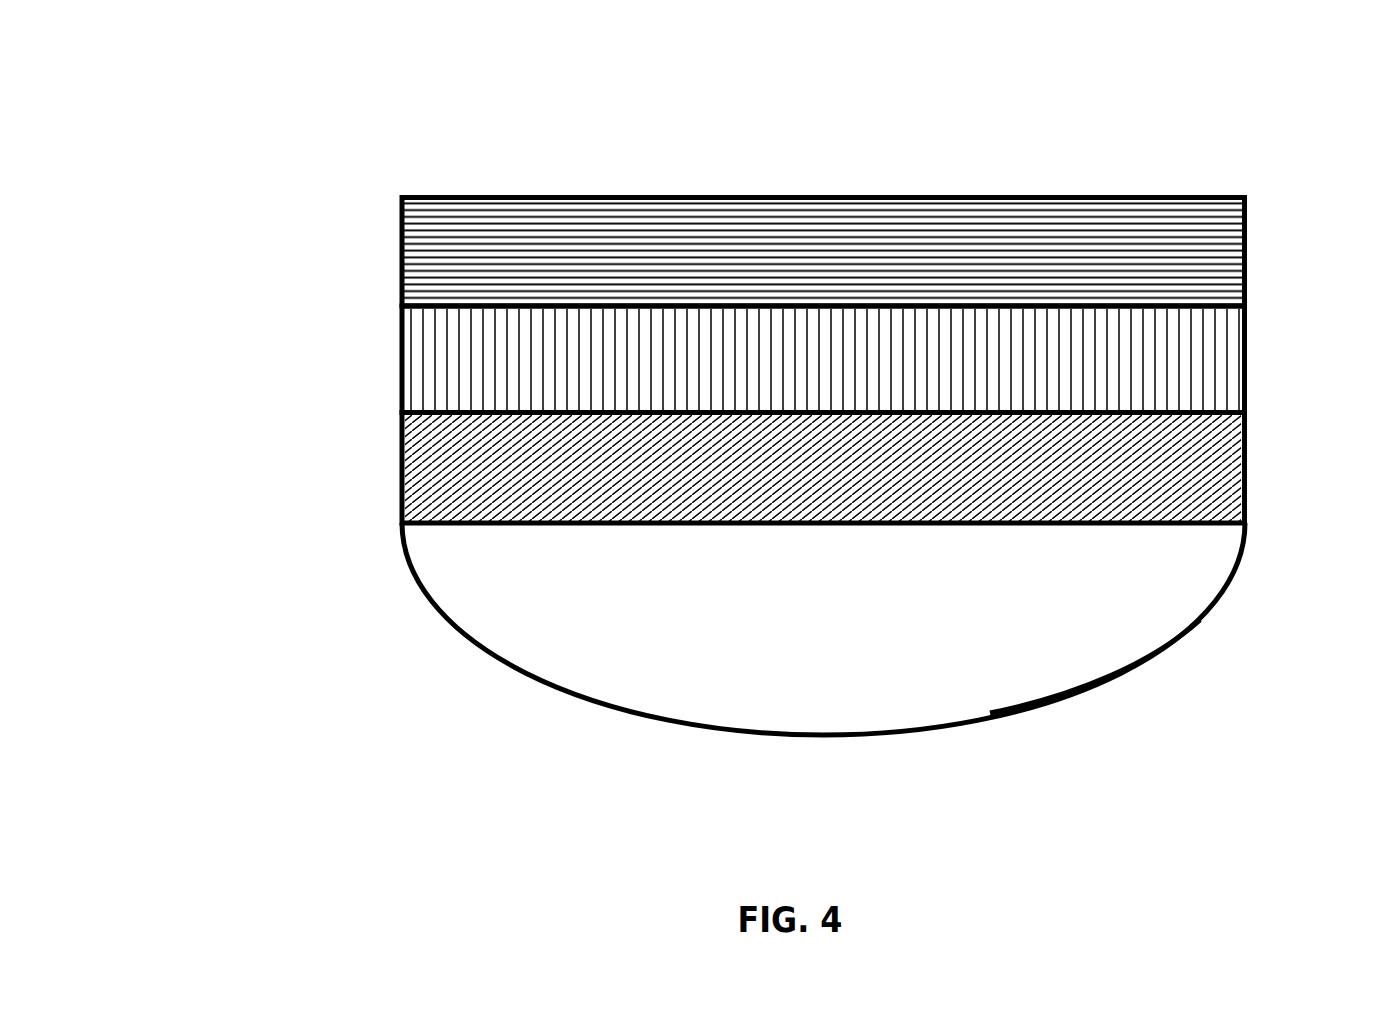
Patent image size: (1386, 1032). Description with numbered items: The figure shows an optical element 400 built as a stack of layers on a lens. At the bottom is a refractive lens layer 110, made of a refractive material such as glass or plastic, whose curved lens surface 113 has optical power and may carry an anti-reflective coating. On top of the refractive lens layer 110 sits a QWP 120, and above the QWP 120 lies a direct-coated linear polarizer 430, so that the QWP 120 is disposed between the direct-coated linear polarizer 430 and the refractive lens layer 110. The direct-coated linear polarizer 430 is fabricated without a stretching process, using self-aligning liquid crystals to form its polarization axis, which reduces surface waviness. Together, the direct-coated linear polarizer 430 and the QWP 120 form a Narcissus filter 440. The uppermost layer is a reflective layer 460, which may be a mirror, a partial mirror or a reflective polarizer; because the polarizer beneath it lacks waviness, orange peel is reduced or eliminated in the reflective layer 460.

The optical element 400 is at (1217, 42).
The reflective layer 460 is at (383, 198).
The direct-coated linear polarizer 430 is at (383, 412).
The quarter-waveplate (QWP) 120 is at (766, 467).
The Narcissus filter 440 is at (751, 414).
The refractive lens layer 110 is at (827, 650).
The lens surface 113 is at (1106, 692).